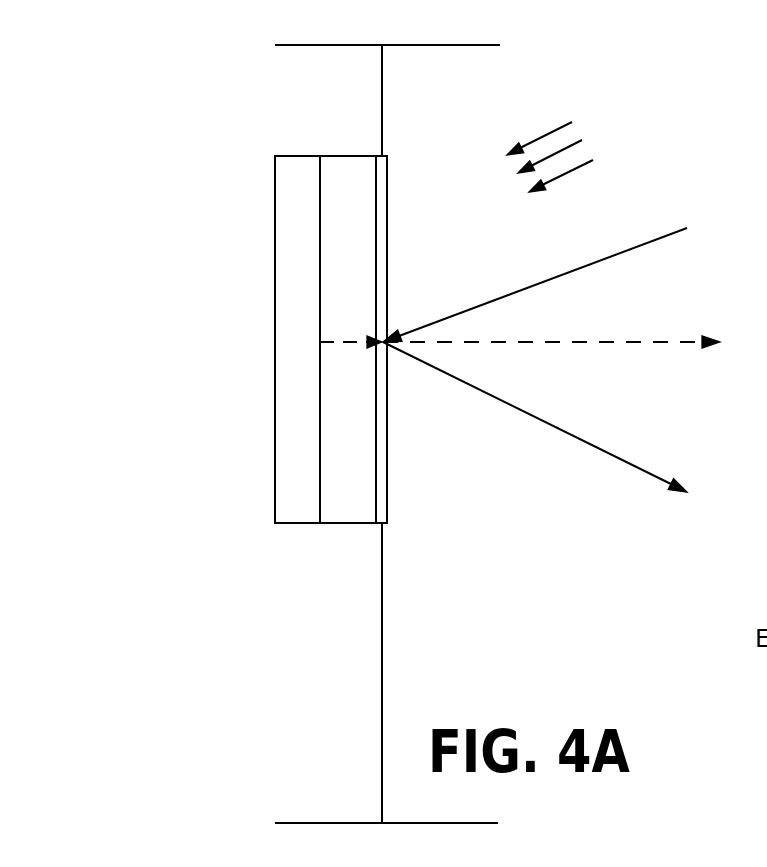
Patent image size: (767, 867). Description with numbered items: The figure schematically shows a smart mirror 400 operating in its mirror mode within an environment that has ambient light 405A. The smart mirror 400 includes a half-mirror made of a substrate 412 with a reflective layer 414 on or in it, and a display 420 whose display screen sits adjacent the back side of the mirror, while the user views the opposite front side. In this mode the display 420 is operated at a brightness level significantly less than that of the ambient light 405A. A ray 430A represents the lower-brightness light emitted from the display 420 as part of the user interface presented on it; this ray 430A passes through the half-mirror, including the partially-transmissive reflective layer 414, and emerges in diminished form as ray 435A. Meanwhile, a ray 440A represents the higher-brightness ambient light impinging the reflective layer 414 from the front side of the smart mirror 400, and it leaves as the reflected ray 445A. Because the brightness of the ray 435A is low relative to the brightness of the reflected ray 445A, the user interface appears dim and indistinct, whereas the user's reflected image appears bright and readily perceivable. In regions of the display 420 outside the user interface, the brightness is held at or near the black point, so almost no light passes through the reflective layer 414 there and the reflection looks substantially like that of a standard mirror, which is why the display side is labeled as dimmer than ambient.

The smart mirror 400 is at (451, 628).
The ambient light 405A is at (577, 171).
The substrate 412 is at (350, 155).
The reflective layer 414 is at (388, 185).
The display 420 is at (300, 156).
The ray 430A is at (357, 343).
The ray 435A is at (622, 341).
The ray 440A is at (637, 247).
The reflected ray 445A is at (637, 466).